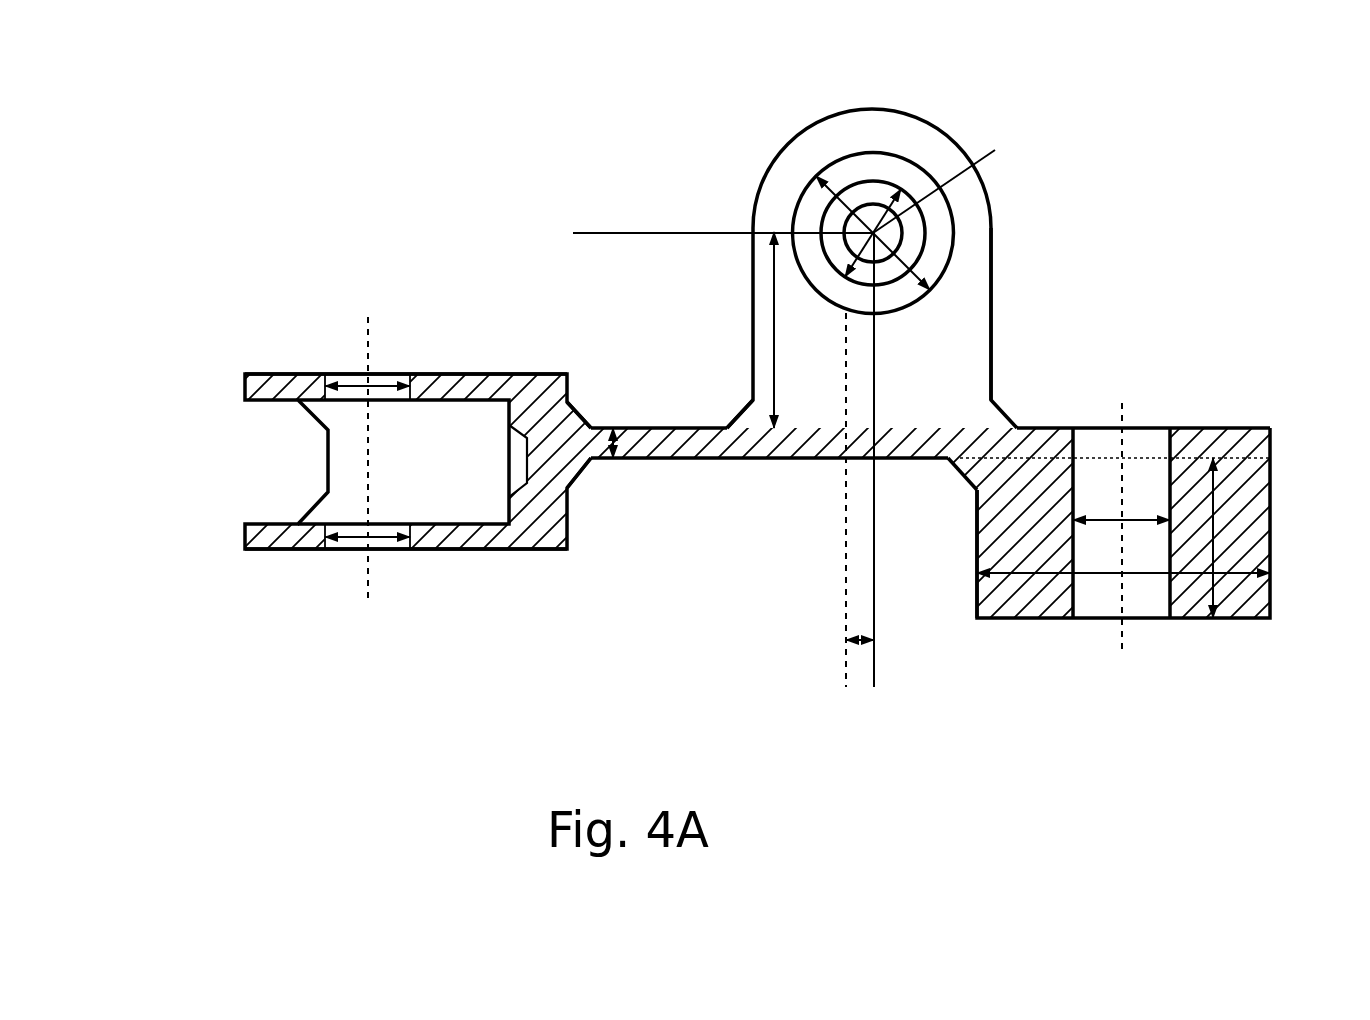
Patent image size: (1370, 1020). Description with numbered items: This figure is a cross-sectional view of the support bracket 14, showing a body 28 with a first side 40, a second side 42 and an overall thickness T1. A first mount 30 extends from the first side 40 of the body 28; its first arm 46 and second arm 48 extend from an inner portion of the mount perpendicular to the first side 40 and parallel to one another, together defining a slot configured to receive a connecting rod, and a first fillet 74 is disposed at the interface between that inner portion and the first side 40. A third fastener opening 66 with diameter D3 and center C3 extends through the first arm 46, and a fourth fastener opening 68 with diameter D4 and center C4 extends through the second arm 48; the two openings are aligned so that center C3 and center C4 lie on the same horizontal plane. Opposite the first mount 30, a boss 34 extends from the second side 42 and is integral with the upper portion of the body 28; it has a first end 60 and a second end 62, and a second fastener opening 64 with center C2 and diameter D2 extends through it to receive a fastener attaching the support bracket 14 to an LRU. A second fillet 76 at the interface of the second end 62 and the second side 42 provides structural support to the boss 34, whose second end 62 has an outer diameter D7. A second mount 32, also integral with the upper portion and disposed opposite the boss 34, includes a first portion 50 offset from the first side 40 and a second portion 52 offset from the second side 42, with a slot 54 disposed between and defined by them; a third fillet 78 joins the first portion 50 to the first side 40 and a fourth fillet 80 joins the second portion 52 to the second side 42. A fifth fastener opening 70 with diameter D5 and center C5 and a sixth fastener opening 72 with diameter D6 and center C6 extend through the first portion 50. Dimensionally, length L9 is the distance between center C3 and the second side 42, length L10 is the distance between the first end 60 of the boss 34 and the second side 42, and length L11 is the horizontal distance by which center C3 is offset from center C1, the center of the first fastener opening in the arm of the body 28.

The support bracket 14 is at (606, 133).
The body 28 is at (757, 462).
The first mount 30 is at (946, 128).
The second mount 32 is at (481, 368).
The boss 34 is at (972, 587).
The first side 40 is at (682, 428).
The second side 42 is at (648, 458).
The first arm 46 is at (962, 307).
The second arm 48 is at (890, 172).
The first portion 50 is at (275, 388).
The second portion 52 is at (283, 540).
The slot 54 is at (281, 452).
The first end 60 is at (1235, 620).
The second end 62 is at (1030, 462).
The second fastener opening 64 is at (1148, 620).
The third fastener opening 66 is at (957, 217).
The fourth fastener opening 68 is at (852, 186).
The fifth fastener opening 70 is at (348, 380).
The sixth fastener opening 72 is at (345, 550).
The first fillet 74 is at (742, 405).
The second fillet 76 is at (973, 467).
The third fillet 78 is at (568, 401).
The fourth fillet 80 is at (574, 486).
The center of first fastener opening C1 is at (846, 610).
The center of second fastener opening C2 is at (1122, 405).
The center of third fastener opening C3 is at (852, 258).
The center of fourth fastener opening C4 is at (995, 150).
The center of fifth fastener opening C5 is at (368, 385).
The center of sixth fastener opening C6 is at (370, 550).
The diameter of second fastener opening D2 is at (1105, 522).
The diameter of third fastener opening D3 is at (885, 262).
The diameter of fourth fastener opening D4 is at (855, 150).
The diameter of fifth fastener opening D5 is at (382, 395).
The diameter of sixth fastener opening D6 is at (372, 550).
The outer diameter of second end of boss D7 is at (1030, 573).
The length L9 is at (782, 300).
The length L10 is at (1213, 518).
The length L11 is at (860, 645).
The thickness T1 is at (610, 442).